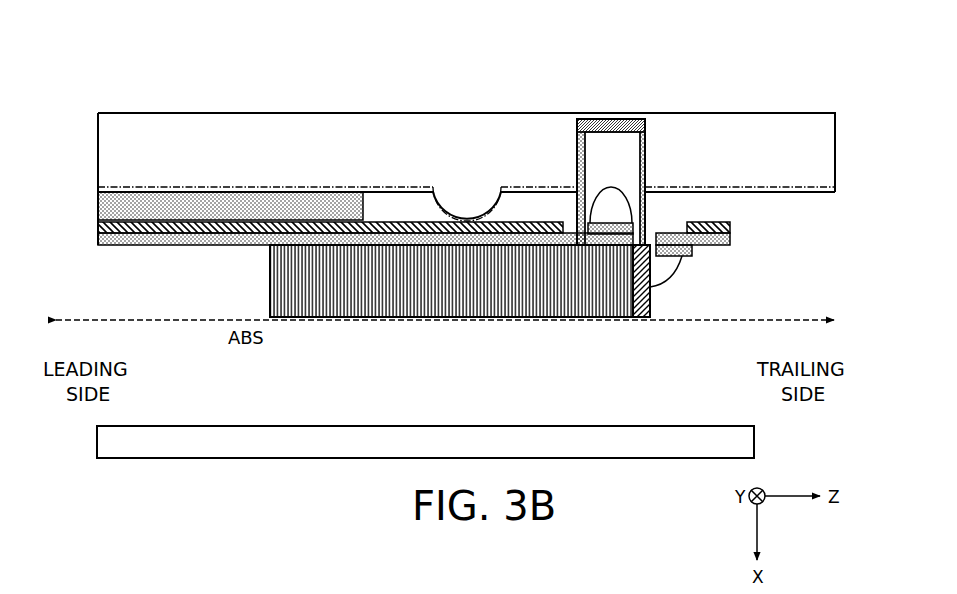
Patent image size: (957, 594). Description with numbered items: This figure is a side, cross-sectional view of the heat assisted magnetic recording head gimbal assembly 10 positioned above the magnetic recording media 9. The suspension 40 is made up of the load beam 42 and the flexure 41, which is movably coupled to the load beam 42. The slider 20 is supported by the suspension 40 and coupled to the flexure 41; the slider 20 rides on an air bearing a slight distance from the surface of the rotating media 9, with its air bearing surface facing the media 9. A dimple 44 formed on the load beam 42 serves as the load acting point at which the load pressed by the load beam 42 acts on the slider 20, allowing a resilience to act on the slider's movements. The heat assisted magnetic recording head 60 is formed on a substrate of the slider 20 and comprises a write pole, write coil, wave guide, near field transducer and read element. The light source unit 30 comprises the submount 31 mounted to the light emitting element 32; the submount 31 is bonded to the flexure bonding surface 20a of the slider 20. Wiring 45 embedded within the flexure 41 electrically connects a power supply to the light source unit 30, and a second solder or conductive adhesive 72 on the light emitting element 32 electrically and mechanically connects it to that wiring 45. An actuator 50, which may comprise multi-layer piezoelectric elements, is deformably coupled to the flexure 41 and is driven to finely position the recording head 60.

The heat assisted magnetic recording head gimbal assembly 10 is at (115, 46).
The magnetic recording media 9 is at (425, 442).
The slider 20 is at (451, 281).
The flexure bonding surface 20a is at (587, 245).
The light source unit 30 is at (599, 94).
The submount 31 is at (623, 120).
The light emitting element 32 is at (611, 188).
The suspension 40 is at (265, 179).
The flexure 41 is at (160, 228).
The load beam 42 is at (740, 168).
The dimple 44 is at (505, 203).
The wiring 45 is at (225, 240).
The actuator 50 is at (230, 206).
The heat assisted magnetic recording head 60 is at (643, 299).
The second solder or conductive adhesive 72 is at (610, 210).